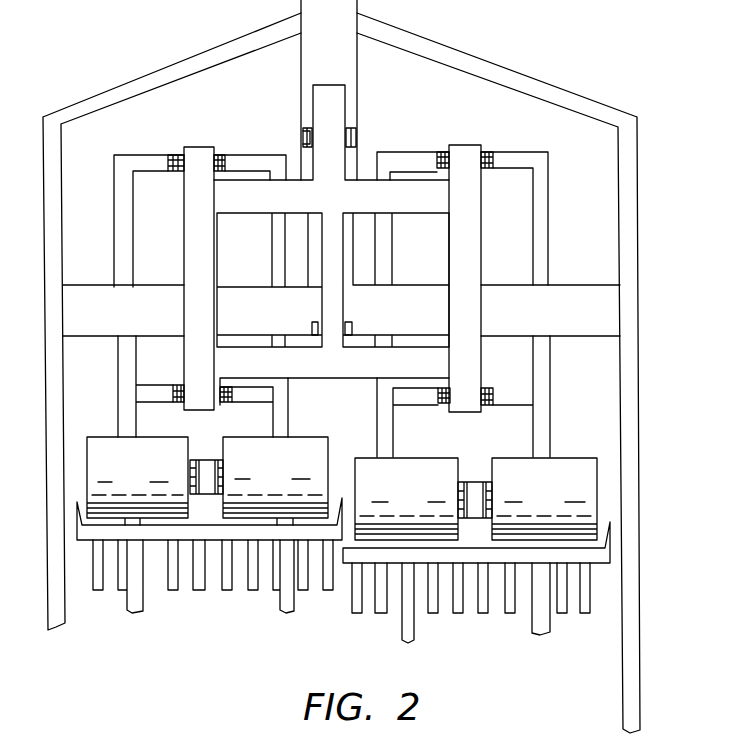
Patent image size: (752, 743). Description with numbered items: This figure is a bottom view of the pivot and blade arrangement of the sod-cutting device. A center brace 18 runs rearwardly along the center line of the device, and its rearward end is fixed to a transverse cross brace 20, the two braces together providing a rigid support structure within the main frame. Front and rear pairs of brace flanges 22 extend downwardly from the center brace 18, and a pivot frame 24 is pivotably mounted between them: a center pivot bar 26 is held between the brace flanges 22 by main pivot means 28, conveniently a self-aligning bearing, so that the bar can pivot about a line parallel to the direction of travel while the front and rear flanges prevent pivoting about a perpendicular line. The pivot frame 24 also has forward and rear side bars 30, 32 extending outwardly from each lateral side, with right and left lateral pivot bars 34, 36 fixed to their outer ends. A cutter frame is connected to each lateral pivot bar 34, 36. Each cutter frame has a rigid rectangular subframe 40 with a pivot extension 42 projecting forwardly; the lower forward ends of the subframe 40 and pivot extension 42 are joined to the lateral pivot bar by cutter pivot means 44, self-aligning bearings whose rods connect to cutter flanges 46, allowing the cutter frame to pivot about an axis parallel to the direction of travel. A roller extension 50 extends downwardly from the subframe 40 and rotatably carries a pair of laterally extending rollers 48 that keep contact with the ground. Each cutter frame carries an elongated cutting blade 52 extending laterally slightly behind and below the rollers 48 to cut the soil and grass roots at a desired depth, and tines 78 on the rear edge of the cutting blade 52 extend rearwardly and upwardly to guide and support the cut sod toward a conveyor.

The center brace 18 is at (314, 64).
The cross brace 20 is at (76, 319).
The brace flanges 22 is at (357, 137).
The pivot frame 24 is at (358, 86).
The center pivot bar 26 is at (320, 236).
The main pivot means 28 is at (304, 132).
The forward side bar 30 is at (415, 203).
The rear side bar 32 is at (357, 370).
The right lateral pivot bar 34 is at (205, 197).
The left lateral pivot bar 36 is at (465, 248).
The subframe 40 is at (117, 395).
The pivot extension 42 is at (114, 202).
The cutter pivot means 44 is at (178, 155).
The cutter flanges 46 is at (221, 155).
The rollers 48 is at (117, 494).
The roller extension 50 is at (205, 462).
The cutting blade 52 is at (76, 530).
The tines 78 is at (222, 590).